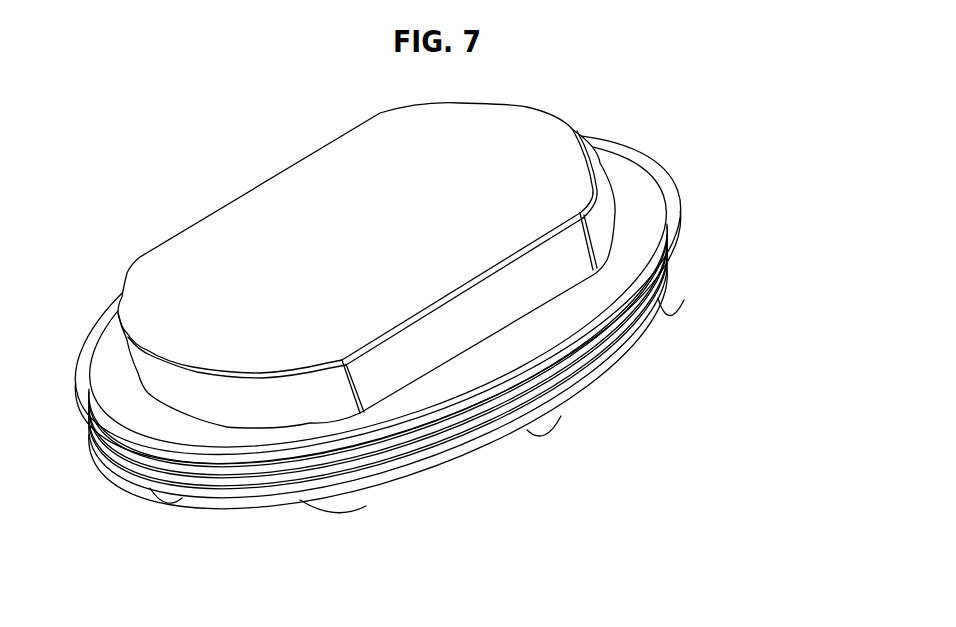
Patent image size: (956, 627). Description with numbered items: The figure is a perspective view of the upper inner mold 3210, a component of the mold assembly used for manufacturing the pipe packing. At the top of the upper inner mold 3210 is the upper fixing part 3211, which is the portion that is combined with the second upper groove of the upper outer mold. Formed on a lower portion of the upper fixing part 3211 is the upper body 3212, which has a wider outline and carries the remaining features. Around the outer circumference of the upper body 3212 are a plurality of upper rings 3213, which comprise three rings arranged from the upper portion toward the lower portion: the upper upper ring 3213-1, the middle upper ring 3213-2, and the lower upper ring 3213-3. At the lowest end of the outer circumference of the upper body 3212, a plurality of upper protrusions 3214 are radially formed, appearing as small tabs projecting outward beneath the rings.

The upper inner mold 3210 is at (427, 334).
The upper fixing part 3211 is at (545, 172).
The upper body 3212 is at (216, 478).
The upper rings 3213 is at (417, 396).
The upper upper ring 3213-1 is at (418, 420).
The middle upper ring 3213-2 is at (470, 423).
The lower upper ring 3213-3 is at (520, 427).
The upper protrusions 3214 is at (680, 308).